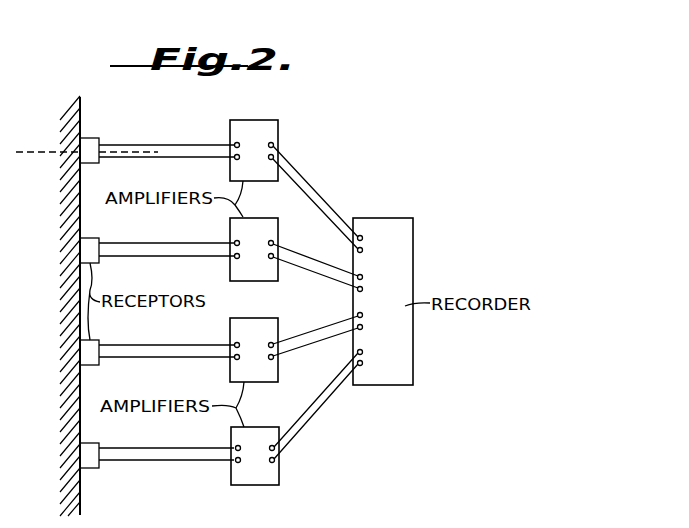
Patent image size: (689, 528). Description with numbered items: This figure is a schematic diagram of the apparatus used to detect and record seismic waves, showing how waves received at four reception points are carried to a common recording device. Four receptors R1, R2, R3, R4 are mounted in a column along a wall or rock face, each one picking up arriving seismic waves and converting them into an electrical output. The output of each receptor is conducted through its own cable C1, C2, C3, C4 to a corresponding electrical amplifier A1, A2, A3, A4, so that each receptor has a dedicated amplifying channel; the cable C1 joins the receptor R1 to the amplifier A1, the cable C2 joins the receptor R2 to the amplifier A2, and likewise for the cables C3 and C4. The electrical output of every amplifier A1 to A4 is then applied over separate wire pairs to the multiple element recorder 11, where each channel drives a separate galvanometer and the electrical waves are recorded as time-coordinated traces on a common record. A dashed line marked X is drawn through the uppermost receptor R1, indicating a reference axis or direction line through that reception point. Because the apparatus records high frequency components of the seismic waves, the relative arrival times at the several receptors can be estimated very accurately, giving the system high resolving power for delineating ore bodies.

The multiple element recorder 11 is at (408, 259).
The receptor R1 is at (91, 118).
The receptor R2 is at (89, 220).
The receptor R3 is at (89, 365).
The receptor R4 is at (90, 468).
The cable C1 is at (197, 160).
The cable C2 is at (197, 258).
The cable C3 is at (197, 360).
The cable C4 is at (197, 463).
The electrical amplifier A1 is at (254, 150).
The electrical amplifier A2 is at (254, 249).
The electrical amplifier A3 is at (254, 350).
The electrical amplifier A4 is at (255, 456).
The axis line X is at (82, 153).